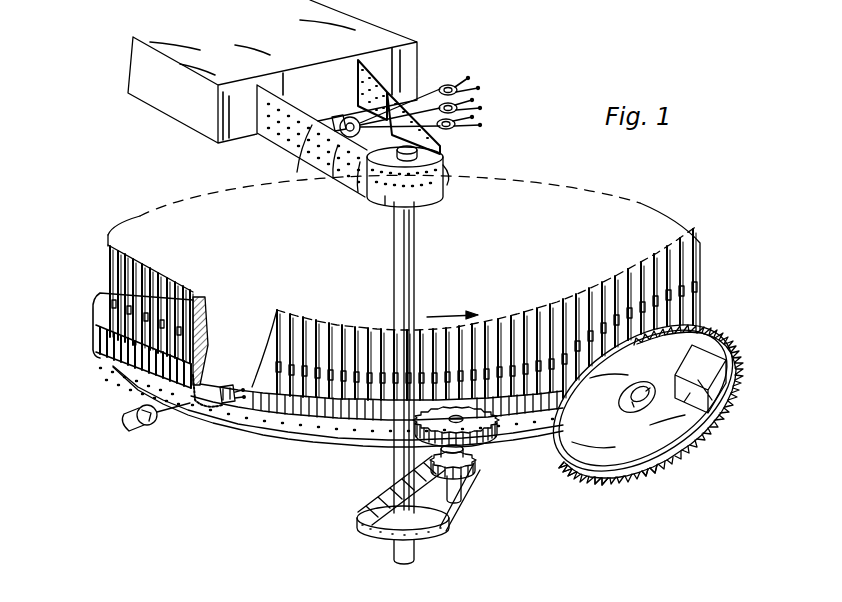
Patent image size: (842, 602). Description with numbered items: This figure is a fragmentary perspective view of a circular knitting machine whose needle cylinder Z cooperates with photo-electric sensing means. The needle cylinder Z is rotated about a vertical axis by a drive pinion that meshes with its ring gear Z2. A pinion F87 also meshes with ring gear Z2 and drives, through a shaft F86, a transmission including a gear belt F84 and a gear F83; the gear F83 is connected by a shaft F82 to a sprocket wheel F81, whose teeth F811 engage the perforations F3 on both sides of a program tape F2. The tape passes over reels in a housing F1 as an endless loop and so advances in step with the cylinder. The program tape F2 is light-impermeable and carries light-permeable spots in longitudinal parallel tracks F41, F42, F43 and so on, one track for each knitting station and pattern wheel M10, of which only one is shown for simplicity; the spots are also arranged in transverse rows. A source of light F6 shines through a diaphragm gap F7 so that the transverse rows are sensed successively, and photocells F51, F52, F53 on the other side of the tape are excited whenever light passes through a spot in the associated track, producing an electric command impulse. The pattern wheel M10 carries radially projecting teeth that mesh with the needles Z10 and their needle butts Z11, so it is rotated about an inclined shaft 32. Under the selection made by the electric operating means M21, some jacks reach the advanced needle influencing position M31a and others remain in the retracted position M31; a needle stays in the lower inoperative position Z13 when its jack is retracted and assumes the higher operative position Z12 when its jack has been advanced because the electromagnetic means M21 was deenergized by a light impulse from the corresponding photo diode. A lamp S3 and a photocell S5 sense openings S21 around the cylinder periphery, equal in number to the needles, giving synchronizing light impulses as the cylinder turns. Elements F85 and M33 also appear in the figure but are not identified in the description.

The housing F1 is at (262, 42).
The program tape F2 is at (283, 145).
The perforations F3 is at (303, 160).
The track F41 is at (340, 172).
The track F42 is at (362, 192).
The track F43 is at (390, 208).
The source of light F6 is at (352, 117).
The gap F7 is at (390, 94).
The photocell F51 is at (477, 76).
The photocell F52 is at (481, 103).
The photocell F53 is at (479, 132).
The sprocket wheel F81 is at (446, 162).
The teeth F811 is at (446, 186).
The shaft F82 is at (415, 276).
The gear F83 is at (440, 527).
The gear belt F84 is at (384, 500).
The pinion F85 is at (473, 468).
The shaft F86 is at (458, 494).
The pinion F87 is at (490, 436).
The needle cylinder Z is at (201, 342).
The ring gear Z2 is at (313, 425).
The needles Z10 is at (517, 365).
The needle butts Z11 is at (527, 355).
The higher operative position Z12 is at (628, 300).
The lower inoperative position Z13 is at (656, 290).
The lamp S3 is at (141, 428).
The photocell S5 is at (227, 386).
The openings S21 is at (190, 406).
The electric operating means M21 is at (712, 365).
The shaft 32 is at (640, 412).
The retracted position M31 is at (580, 488).
The gear tooth M33 is at (610, 490).
The advanced needle influencing position M31a is at (653, 490).
The pattern wheel M10 is at (667, 447).